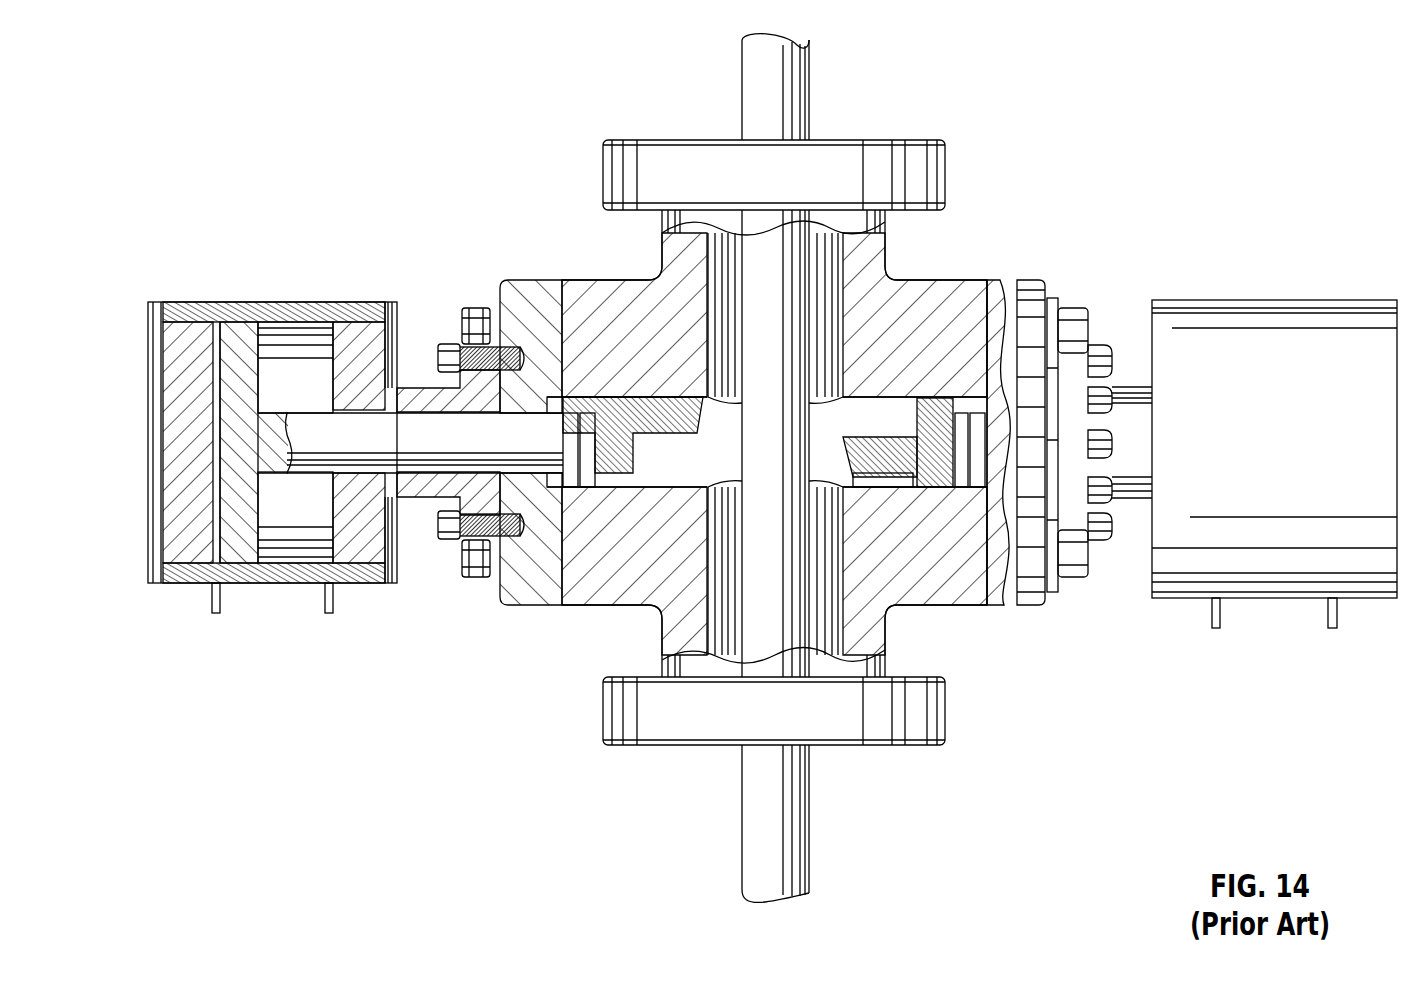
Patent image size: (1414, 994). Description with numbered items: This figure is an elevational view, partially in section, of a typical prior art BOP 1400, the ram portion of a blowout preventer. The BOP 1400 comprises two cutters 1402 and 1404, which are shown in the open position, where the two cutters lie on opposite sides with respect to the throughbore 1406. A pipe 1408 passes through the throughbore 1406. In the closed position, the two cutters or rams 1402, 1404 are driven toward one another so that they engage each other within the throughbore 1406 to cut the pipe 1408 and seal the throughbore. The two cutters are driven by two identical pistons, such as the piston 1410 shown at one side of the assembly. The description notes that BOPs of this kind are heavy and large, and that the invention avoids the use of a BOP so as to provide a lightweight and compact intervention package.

The prior art BOP 1400 is at (374, 97).
The cutter 1402 is at (613, 427).
The cutter 1404 is at (933, 447).
The throughbore 1406 is at (823, 297).
The pipe 1408 is at (740, 80).
The piston 1410 is at (245, 435).